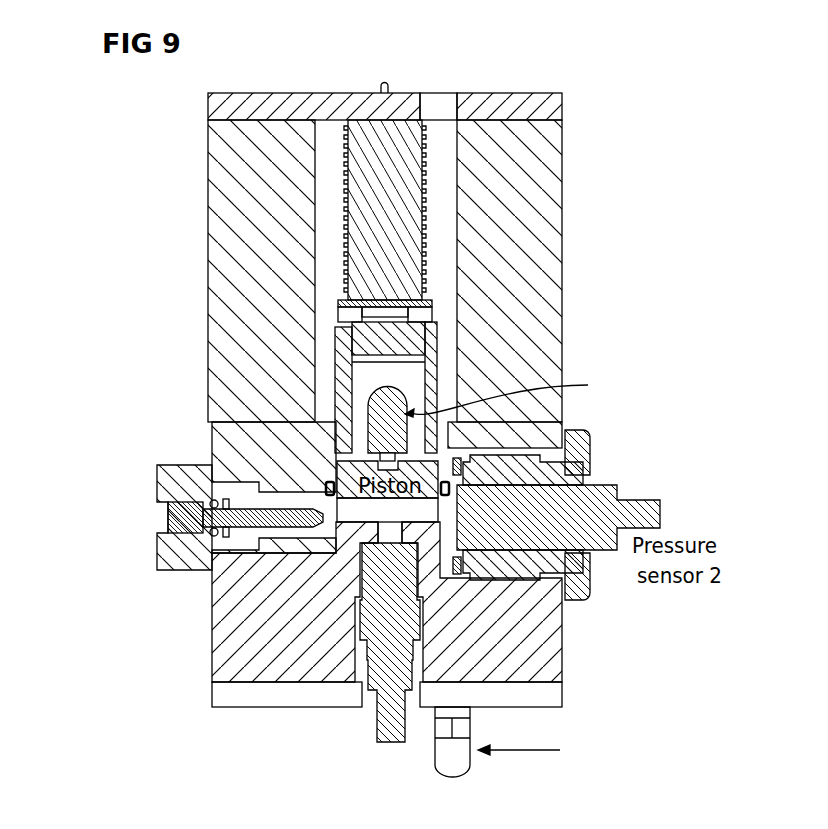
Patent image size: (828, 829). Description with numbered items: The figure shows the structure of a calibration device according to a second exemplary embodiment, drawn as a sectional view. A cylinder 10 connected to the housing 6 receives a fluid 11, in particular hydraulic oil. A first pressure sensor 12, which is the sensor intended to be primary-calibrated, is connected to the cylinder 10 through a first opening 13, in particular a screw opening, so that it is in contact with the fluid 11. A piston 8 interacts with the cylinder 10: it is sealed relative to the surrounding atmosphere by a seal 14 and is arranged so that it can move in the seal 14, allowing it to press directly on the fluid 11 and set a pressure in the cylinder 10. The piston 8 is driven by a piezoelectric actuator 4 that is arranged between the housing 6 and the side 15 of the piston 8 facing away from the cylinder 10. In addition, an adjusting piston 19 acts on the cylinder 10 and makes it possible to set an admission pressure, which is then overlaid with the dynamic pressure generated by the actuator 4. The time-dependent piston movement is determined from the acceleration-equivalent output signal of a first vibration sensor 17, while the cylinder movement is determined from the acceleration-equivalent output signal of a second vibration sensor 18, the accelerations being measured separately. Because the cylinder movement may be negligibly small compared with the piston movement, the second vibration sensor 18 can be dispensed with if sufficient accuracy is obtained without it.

The piezoelectric actuator 4 is at (422, 163).
The housing 6 is at (427, 395).
The piston 8 is at (437, 377).
The cylinder 10 is at (325, 527).
The fluid 11 is at (362, 535).
The first pressure sensor 12 is at (388, 708).
The first opening 13 is at (417, 658).
The seal 14 is at (323, 488).
The side of the piston facing away from the cylinder 15 is at (437, 322).
The first vibration sensor 17 is at (383, 413).
The second vibration sensor 18 is at (452, 758).
The adjusting piston 19 is at (168, 515).